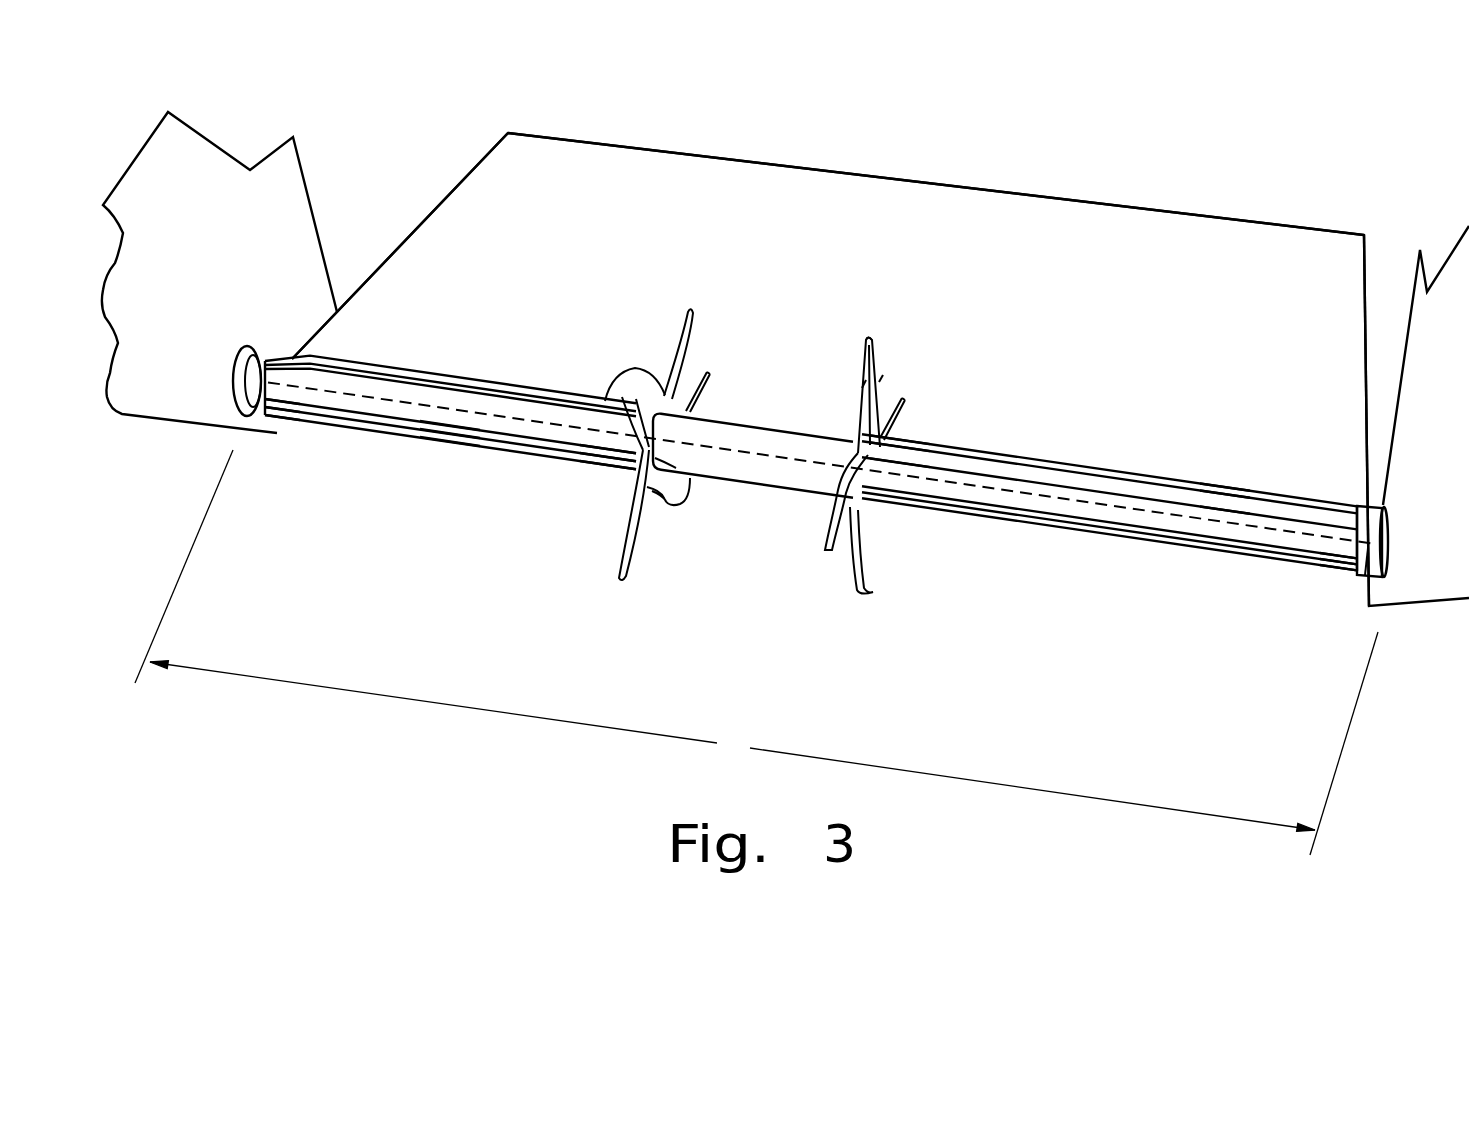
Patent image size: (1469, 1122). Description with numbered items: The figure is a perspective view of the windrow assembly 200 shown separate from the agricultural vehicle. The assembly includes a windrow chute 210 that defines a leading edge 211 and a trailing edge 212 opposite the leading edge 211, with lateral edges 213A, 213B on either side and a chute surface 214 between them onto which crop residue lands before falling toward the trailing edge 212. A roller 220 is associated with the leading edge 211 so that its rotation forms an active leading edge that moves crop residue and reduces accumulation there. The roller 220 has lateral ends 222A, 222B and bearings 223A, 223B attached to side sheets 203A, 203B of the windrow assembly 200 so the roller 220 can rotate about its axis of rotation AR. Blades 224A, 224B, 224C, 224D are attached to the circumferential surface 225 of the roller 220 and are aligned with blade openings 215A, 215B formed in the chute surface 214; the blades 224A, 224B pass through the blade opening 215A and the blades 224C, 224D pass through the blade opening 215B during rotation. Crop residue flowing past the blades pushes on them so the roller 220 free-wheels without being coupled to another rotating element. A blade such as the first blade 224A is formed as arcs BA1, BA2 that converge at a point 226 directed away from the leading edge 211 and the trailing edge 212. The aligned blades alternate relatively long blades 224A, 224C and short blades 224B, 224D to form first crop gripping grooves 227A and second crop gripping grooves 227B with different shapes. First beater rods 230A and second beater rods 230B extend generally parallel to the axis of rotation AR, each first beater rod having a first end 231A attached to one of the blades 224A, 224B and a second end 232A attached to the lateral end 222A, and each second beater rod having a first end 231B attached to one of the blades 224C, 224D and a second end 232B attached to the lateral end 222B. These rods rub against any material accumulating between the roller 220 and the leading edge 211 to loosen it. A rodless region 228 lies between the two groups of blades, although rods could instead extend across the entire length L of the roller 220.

The windrow assembly 200 is at (697, 602).
The windrow chute 210 is at (786, 166).
The leading edge 211 is at (538, 388).
The trailing edge 212 is at (953, 183).
The lateral edge 213A is at (1364, 336).
The lateral edge 213B is at (437, 224).
The chute surface 214 is at (845, 253).
The blade opening 215A is at (901, 404).
The blade opening 215B is at (712, 362).
The roller 220 is at (752, 530).
The lateral end 222A is at (1368, 503).
The lateral end 222B is at (303, 357).
The bearing 223A is at (1386, 502).
The bearing 223B is at (252, 356).
The first blade 224A is at (862, 390).
The additional blade 224B is at (888, 397).
The blade 224C is at (700, 350).
The blade 224D is at (632, 382).
The circumferential surface 225 is at (1015, 492).
The point 226 is at (867, 338).
The first crop gripping grooves 227A is at (857, 432).
The second crop gripping grooves 227B is at (658, 392).
The rodless region 228 is at (728, 432).
The first beater rods 230A is at (1210, 520).
The second beater rods 230B is at (470, 439).
The first end 231A is at (867, 508).
The first end 231B is at (642, 437).
The second end 232A is at (1352, 560).
The second end 232B is at (301, 424).
The side sheet 203A is at (1427, 332).
The side sheet 203B is at (226, 221).
The arc BA1 is at (863, 388).
The arc BA2 is at (883, 375).
The axis of rotation AR is at (1375, 543).
The length L is at (756, 652).